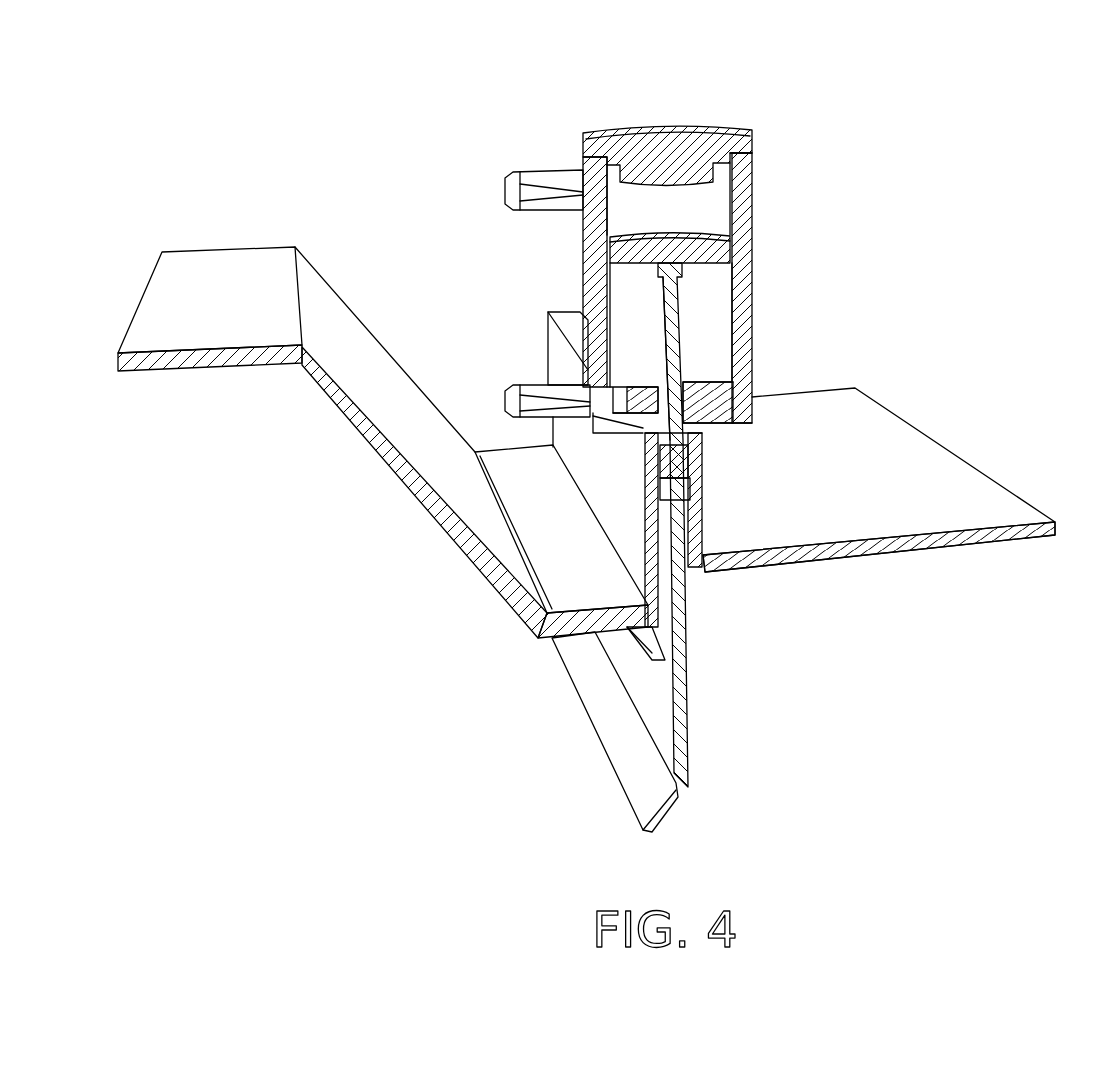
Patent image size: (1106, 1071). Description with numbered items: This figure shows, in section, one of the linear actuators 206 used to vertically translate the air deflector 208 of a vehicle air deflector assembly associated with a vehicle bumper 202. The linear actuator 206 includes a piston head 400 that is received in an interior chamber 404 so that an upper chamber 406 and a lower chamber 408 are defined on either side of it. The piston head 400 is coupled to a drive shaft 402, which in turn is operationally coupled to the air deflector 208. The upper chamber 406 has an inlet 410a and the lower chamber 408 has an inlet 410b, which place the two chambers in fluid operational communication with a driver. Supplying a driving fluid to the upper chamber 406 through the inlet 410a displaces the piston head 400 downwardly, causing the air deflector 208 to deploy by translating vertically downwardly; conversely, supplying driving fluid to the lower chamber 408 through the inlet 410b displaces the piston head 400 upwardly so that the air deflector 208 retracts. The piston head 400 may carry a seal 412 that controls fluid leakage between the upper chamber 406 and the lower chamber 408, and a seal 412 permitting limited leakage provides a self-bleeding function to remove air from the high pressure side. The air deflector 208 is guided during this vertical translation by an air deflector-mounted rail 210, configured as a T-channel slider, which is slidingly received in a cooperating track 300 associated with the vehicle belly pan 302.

The vehicle bumper 202 is at (184, 370).
The air deflector 208 is at (627, 767).
The vehicle belly pan 302 is at (1003, 500).
The cooperating track 300 is at (698, 470).
The air deflector-mounted rail 210 is at (680, 580).
The linear actuator 206 is at (800, 219).
The interior chamber 404 is at (660, 198).
The piston head 400 is at (705, 230).
The upper chamber 406 is at (640, 210).
The seal 412 is at (732, 249).
The lower chamber 408 is at (718, 303).
The drive shaft 402 is at (673, 332).
The inlet 410a is at (522, 172).
The inlet 410b is at (533, 387).